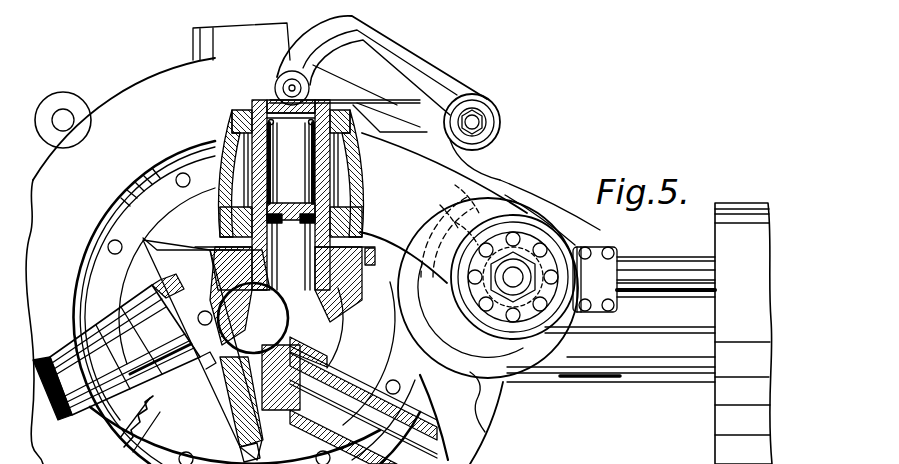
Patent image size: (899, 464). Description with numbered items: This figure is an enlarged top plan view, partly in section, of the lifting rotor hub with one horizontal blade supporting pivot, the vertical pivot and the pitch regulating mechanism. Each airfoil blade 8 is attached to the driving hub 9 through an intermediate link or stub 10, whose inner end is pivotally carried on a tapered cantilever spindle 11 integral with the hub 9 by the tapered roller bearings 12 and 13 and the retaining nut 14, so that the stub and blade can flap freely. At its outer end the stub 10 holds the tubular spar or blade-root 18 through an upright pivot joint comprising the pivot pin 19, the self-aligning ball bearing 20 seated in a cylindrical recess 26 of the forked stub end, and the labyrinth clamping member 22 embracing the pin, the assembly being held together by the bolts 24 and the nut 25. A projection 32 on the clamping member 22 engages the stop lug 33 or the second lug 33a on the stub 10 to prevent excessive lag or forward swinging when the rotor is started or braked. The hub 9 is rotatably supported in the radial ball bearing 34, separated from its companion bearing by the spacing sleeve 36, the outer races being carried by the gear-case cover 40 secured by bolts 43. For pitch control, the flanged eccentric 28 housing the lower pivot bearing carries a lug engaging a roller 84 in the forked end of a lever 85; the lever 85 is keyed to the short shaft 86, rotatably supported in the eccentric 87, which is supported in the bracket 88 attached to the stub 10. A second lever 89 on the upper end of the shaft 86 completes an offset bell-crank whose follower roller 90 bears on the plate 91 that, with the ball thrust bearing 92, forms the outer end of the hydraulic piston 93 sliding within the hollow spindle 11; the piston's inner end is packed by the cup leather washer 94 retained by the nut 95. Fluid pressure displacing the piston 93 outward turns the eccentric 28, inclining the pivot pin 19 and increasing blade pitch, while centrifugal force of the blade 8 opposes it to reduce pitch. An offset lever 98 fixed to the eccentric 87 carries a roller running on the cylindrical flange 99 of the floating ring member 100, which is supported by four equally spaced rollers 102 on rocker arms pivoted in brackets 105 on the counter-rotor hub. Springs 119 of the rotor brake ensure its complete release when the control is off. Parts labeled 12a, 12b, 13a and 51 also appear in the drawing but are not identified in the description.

The airfoil blade 8 is at (728, 217).
The driving hub 9 is at (180, 267).
The intermediate link or stub 10 is at (353, 305).
The tapered cantilever spindle 11 is at (70, 320).
The tapered roller bearing 12 is at (217, 220).
The cylinder 12a is at (410, 250).
The cylinder 12b is at (160, 300).
The tapered roller bearing 13 is at (227, 113).
The lug 13a is at (375, 250).
The retaining nut 14 is at (250, 100).
The tubular spar or blade-root 18 is at (673, 270).
The pivot pin 19 is at (513, 277).
The self-aligning ball bearing 20 is at (540, 303).
The labyrinth clamping member 22 is at (597, 252).
The bolts 24 is at (617, 312).
The nut 25 is at (612, 252).
The cylindrical recess 26 is at (533, 207).
The flanged eccentric 28 is at (460, 365).
The projection 32 is at (452, 205).
The stop lug 33 is at (462, 330).
The second lug 33a is at (455, 193).
The radial ball bearing 34 is at (330, 332).
The spacing sleeve 36 is at (291, 173).
The gear-case cover 40 is at (158, 222).
The bolts 43 is at (180, 173).
The stud 51 is at (213, 45).
The roller 84 is at (548, 212).
The lever 85 is at (520, 163).
The short shaft 86 is at (487, 110).
The eccentric 87 is at (507, 107).
The bracket 88 is at (513, 118).
The second lever 89 is at (418, 65).
The follower roller 90 is at (313, 88).
The plate 91 is at (295, 112).
The ball thrust bearing 92 is at (291, 163).
The hydraulic piston 93 is at (291, 163).
The cup leather washer 94 is at (291, 256).
The nut 95 is at (291, 206).
The offset lever 98 is at (395, 102).
The cylindrical flange 99 is at (217, 132).
The floating ring member 100 is at (143, 100).
The rollers 102 is at (63, 110).
The bracket 105 is at (143, 168).
The springs 119 is at (167, 432).